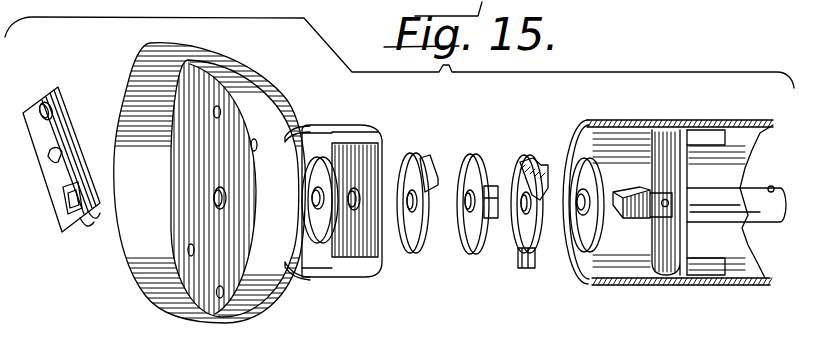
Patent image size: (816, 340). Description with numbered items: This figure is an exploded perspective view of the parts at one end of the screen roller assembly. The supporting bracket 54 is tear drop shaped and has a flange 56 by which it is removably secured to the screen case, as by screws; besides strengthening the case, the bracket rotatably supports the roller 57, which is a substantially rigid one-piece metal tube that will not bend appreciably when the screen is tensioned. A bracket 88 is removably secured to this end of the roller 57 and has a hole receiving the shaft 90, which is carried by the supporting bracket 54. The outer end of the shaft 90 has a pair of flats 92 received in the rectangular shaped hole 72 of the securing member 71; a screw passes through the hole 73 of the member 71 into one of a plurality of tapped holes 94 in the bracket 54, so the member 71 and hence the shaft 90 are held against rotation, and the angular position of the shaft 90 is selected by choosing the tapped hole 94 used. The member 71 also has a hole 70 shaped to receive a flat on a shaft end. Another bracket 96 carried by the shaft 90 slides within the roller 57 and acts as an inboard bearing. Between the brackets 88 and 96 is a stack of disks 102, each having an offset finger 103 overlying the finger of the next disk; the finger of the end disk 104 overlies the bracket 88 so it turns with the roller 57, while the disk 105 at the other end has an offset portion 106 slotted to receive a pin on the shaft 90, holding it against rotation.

The supporting bracket 54 is at (263, 88).
The flange 56 is at (135, 78).
The tapped holes 94 is at (216, 116).
The hole 70 is at (52, 161).
The securing member 71 is at (62, 110).
The rectangular shaped hole 72 is at (73, 205).
The hole 73 is at (42, 106).
The bracket 88 is at (384, 146).
The end disk 104 is at (408, 253).
The disks 102 is at (462, 247).
The offset finger 103 is at (438, 163).
The disk 105 is at (540, 262).
The offset portion 106 is at (534, 157).
The roller 57 is at (741, 122).
The bracket 96 is at (701, 125).
The flats 92 is at (628, 187).
The shaft 90 is at (746, 186).